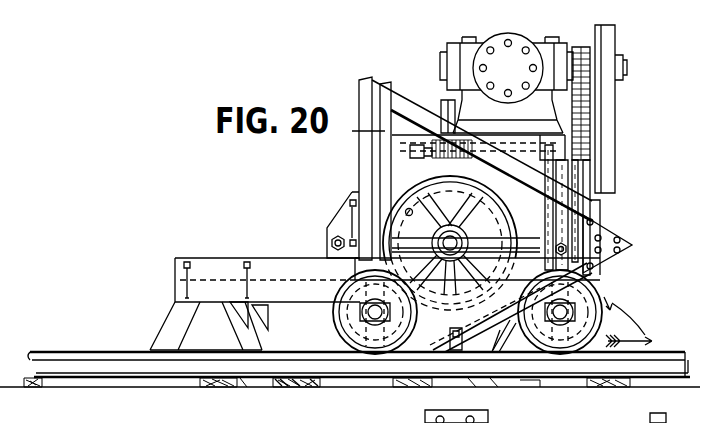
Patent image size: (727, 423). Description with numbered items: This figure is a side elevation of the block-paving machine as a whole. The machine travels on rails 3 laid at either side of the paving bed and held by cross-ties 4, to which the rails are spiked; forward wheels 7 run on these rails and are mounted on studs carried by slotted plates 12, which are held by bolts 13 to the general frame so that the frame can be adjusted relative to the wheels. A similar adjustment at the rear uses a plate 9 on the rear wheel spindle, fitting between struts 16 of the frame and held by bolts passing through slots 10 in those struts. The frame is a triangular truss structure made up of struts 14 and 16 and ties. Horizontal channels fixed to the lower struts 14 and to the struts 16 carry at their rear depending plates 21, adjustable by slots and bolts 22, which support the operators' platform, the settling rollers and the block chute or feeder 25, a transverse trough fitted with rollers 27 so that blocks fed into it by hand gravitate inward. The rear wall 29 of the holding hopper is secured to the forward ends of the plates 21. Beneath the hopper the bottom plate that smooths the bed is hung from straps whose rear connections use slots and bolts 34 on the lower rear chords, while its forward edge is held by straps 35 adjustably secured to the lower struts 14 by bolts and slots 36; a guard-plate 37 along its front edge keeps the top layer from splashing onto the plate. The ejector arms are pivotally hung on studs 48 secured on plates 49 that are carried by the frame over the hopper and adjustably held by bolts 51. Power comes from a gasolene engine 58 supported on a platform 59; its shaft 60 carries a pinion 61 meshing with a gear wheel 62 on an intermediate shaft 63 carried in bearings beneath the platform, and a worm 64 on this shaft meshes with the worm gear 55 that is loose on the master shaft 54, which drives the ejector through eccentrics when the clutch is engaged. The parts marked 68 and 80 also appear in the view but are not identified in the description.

The rails 3 is at (80, 352).
The cross-ties 4 is at (33, 386).
The forward wheels 7 is at (585, 312).
The plate 9 is at (667, 417).
The slots 10 is at (425, 414).
The slotted plates 12 is at (603, 225).
The bolts 13 is at (617, 180).
The struts 14 is at (400, 92).
The struts 16 is at (359, 82).
The depending plates 21 is at (215, 268).
The slots and bolts 22 is at (185, 262).
The block chute or feeder 25 is at (297, 384).
The rollers 27 is at (290, 386).
The rear wall 29 is at (322, 380).
The slots and bolts 34 is at (510, 336).
The straps 35 is at (447, 341).
The bolts and slots 36 is at (511, 307).
The guard-plate 37 is at (500, 325).
The studs 48 is at (331, 243).
The plates 49 is at (352, 215).
The bolts 51 is at (350, 200).
The master shaft 54 is at (466, 238).
The worm gear 55 is at (400, 178).
The motor or engine 58 is at (516, 43).
The platform 59 is at (447, 100).
The shaft 60 is at (624, 69).
The pinion 61 is at (576, 47).
The gear wheel 62 is at (591, 117).
The intermediate shaft 63 is at (428, 147).
The worm 64 is at (440, 172).
The gusset plate 68 is at (640, 228).
The pin 80 is at (438, 233).